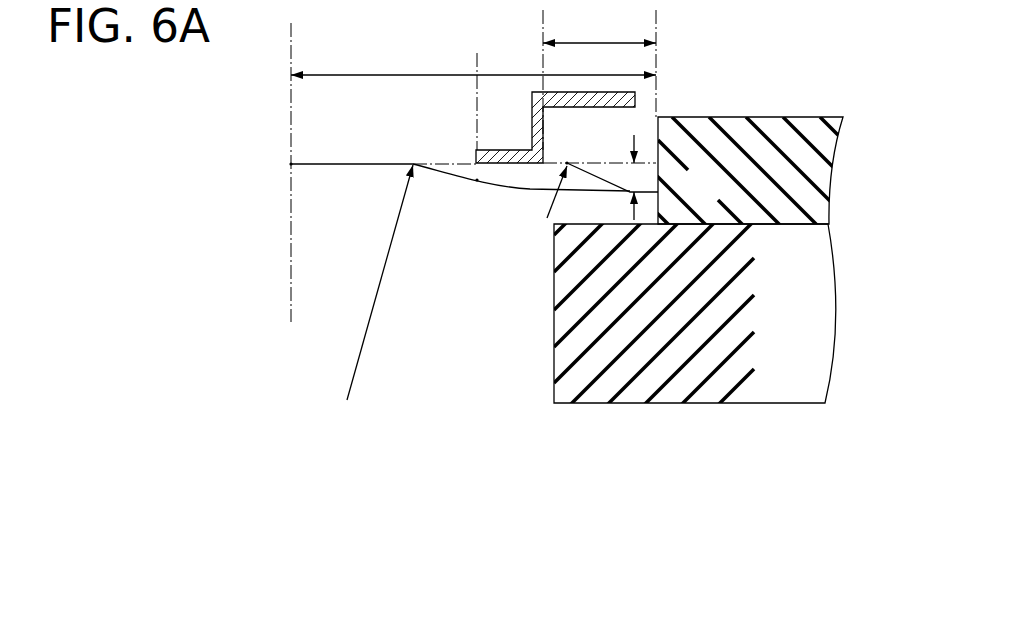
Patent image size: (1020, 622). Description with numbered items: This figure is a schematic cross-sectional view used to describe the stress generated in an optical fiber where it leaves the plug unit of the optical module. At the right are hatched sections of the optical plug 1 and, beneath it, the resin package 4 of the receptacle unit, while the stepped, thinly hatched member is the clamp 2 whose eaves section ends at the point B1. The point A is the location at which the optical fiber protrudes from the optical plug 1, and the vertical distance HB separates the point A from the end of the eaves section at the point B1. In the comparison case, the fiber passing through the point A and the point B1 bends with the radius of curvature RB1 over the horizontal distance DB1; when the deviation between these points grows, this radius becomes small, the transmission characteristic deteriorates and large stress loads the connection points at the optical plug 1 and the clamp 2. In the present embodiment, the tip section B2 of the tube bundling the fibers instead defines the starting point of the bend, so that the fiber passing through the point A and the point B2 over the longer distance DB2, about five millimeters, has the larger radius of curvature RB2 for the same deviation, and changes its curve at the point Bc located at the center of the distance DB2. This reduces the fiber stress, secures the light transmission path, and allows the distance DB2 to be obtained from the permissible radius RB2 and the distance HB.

The optical plug 1 is at (795, 123).
The clamp 2 is at (636, 100).
The resin package 4 is at (633, 392).
The point A is at (650, 192).
The distance HB is at (648, 175).
The point B1 is at (544, 162).
The tip section B2 is at (292, 163).
The point Bc is at (476, 181).
The radius of curvature RB1 is at (551, 207).
The radius of curvature RB2 is at (380, 284).
The distance DB1 is at (599, 33).
The distance DB2 is at (473, 63).